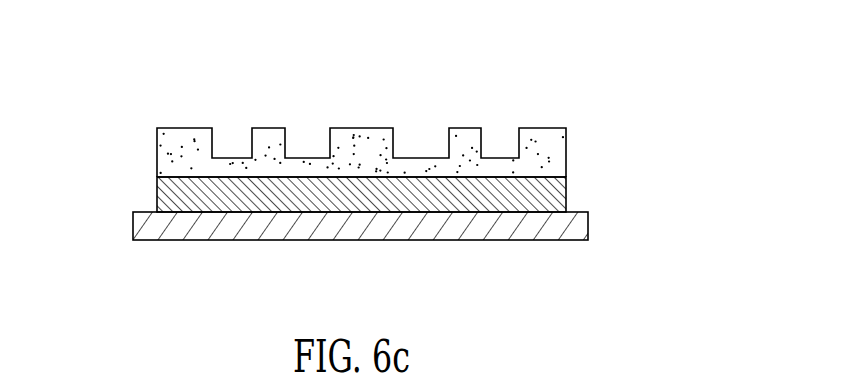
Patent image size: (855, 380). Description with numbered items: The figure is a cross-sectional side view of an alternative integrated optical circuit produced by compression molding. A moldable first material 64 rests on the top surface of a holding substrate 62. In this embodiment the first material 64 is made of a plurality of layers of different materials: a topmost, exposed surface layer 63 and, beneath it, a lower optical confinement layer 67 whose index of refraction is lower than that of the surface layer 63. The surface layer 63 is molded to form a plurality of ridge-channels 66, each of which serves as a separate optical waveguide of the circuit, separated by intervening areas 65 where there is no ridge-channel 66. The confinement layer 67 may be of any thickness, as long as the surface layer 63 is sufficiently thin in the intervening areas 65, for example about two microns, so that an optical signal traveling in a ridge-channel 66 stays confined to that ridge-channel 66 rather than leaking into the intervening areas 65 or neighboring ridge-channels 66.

The holding substrate 62 is at (142, 238).
The surface layer 63 is at (187, 140).
The first material 64 is at (124, 168).
The intervening areas 65 is at (230, 165).
The ridge-channel 66 is at (272, 148).
The optical confinement layer 67 is at (417, 192).